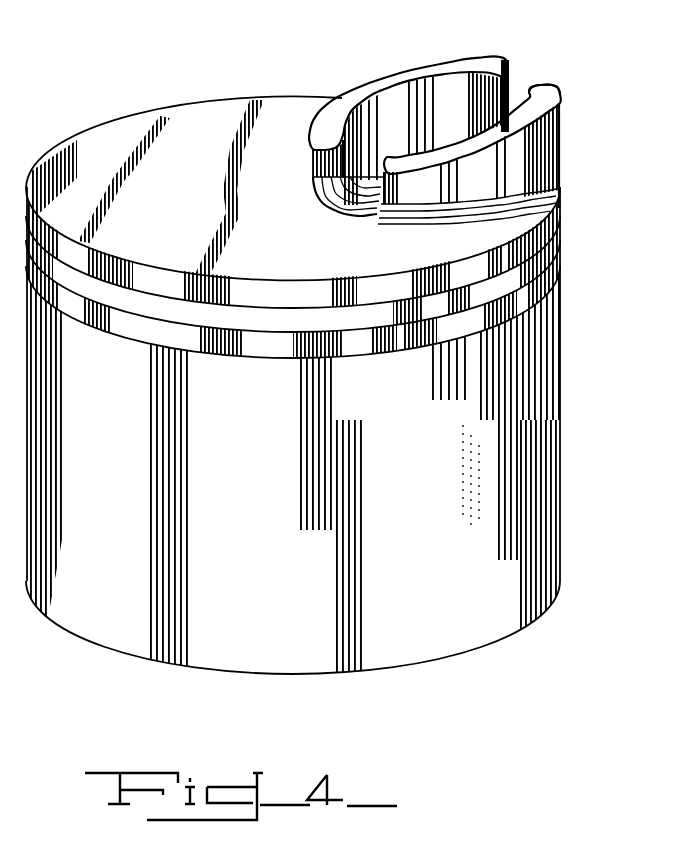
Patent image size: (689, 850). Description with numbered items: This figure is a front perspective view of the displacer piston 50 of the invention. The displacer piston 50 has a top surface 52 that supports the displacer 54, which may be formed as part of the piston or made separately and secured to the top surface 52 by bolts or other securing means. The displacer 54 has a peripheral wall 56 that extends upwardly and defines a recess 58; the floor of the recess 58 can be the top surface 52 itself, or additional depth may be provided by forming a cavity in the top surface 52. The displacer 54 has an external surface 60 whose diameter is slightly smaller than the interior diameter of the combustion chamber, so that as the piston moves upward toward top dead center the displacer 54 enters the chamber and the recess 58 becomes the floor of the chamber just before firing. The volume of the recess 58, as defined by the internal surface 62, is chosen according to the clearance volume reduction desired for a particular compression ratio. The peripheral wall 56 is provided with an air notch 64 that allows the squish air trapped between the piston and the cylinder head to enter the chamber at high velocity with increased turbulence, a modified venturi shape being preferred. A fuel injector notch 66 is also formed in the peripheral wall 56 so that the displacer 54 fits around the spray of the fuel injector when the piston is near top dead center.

The displacer piston 50 is at (561, 481).
The top surface 52 is at (133, 130).
The displacer 54 is at (403, 50).
The peripheral wall 56 is at (538, 110).
The recess 58 is at (370, 185).
The external surface 60 is at (516, 162).
The internal surface 62 is at (372, 117).
The air notch 64 is at (300, 192).
The fuel injector notch 66 is at (510, 84).